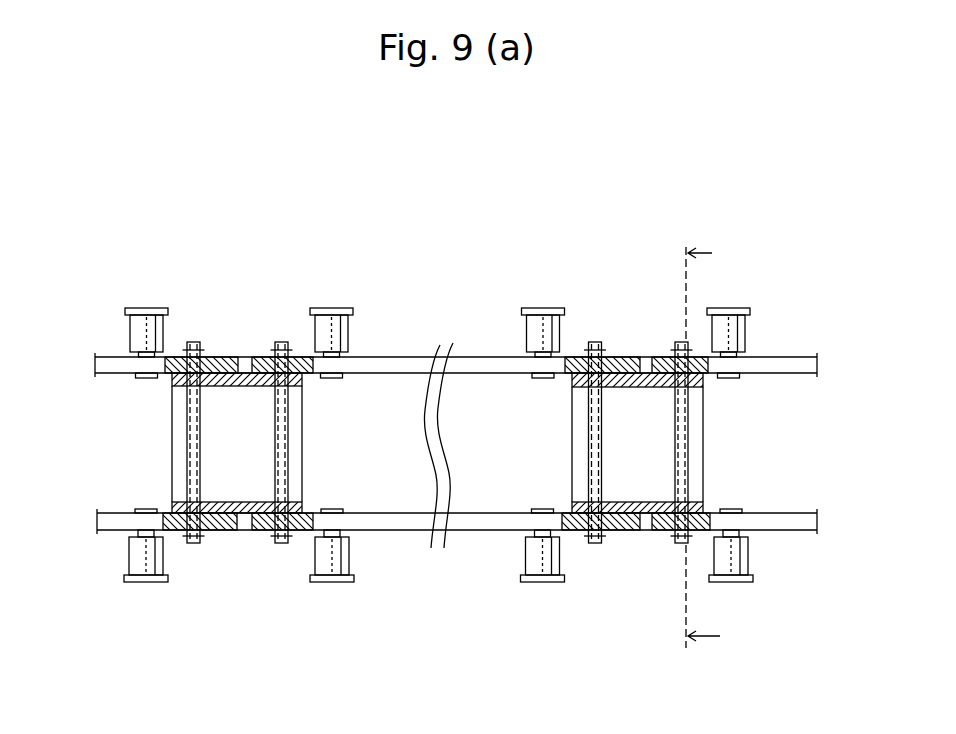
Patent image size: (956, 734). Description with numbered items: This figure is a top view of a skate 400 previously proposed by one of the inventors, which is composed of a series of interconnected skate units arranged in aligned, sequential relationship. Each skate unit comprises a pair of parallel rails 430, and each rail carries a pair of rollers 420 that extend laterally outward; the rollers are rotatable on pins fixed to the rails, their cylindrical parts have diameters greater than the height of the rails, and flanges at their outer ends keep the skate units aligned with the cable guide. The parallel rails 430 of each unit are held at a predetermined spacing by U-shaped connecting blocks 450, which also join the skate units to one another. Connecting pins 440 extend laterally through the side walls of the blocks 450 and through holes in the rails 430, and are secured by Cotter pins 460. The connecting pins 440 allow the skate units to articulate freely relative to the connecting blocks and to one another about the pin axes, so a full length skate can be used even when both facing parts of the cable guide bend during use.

The skate 400 is at (456, 476).
The rollers 420 is at (140, 332).
The rails 430 is at (115, 515).
The connecting pins 440 is at (282, 345).
The U-shaped connecting blocks 450 is at (172, 430).
The Cotter pins 460 is at (181, 340).